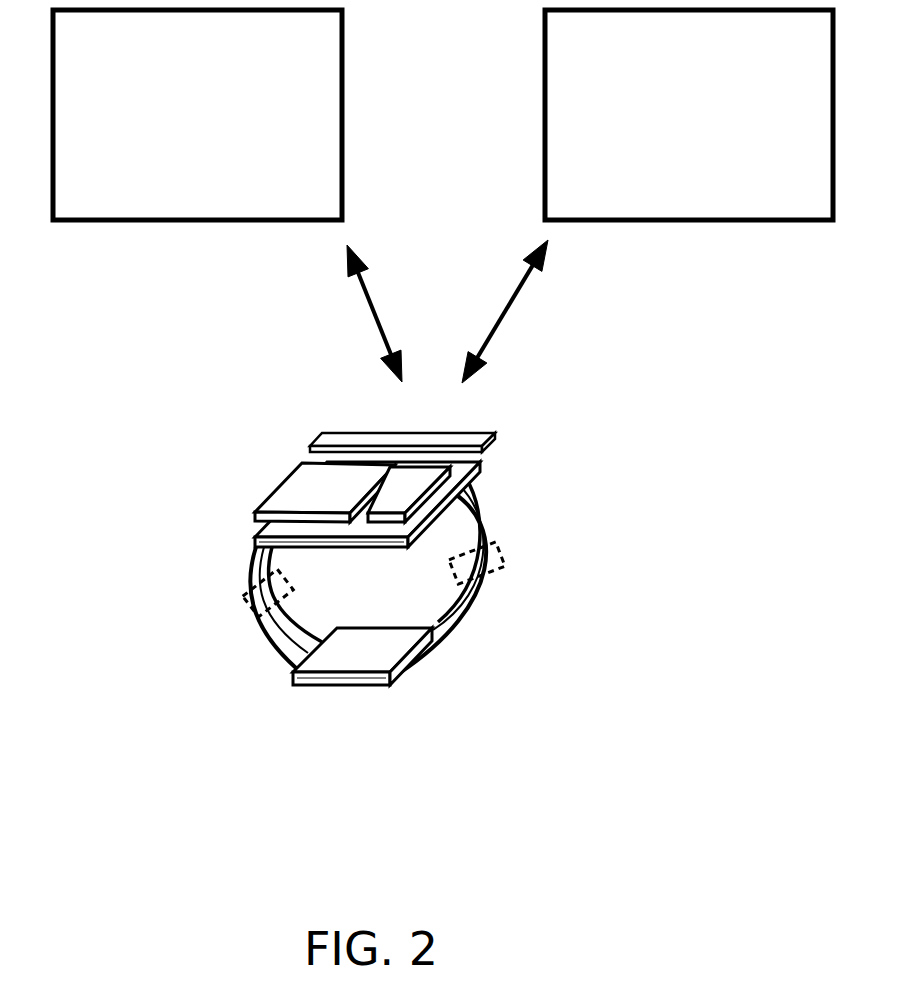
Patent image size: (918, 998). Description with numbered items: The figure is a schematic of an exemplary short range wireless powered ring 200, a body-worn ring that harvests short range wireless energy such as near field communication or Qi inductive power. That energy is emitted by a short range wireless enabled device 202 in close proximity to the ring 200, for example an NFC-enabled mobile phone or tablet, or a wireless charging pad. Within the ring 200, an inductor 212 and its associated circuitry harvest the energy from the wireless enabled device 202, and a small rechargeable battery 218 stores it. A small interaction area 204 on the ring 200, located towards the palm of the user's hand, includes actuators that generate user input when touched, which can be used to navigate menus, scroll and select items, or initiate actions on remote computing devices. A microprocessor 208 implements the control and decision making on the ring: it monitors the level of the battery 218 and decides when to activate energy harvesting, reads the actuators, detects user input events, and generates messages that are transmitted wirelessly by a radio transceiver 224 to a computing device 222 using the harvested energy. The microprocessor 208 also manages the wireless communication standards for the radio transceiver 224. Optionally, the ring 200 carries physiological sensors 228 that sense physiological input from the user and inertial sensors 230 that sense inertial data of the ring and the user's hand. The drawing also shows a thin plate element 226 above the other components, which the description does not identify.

The short range wireless powered ring 200 is at (692, 666).
The short range wireless enabled device 202 is at (689, 115).
The interaction area 204 is at (380, 650).
The microprocessor 208 is at (413, 490).
The inductor 212 is at (288, 645).
The battery 218 is at (252, 540).
The computing device 222 is at (197, 115).
The radio transceiver 224 is at (312, 495).
The antenna 226 is at (495, 440).
The physiological sensors 228 is at (477, 570).
The inertial sensors 230 is at (247, 605).